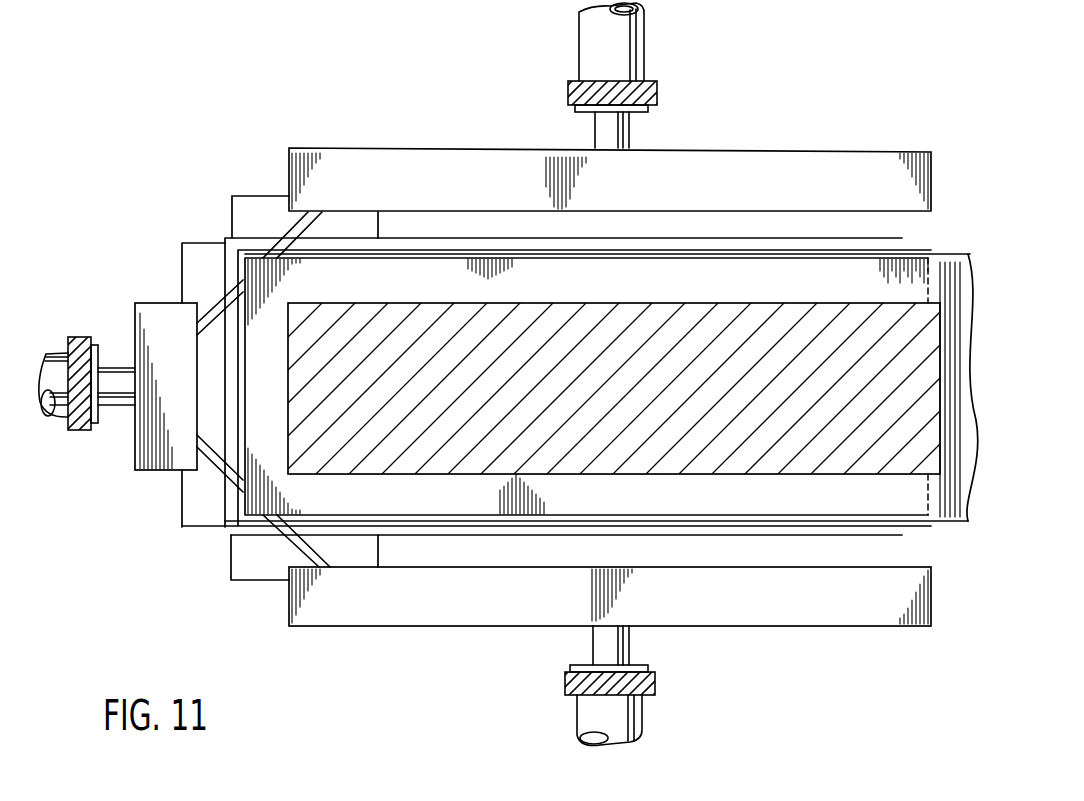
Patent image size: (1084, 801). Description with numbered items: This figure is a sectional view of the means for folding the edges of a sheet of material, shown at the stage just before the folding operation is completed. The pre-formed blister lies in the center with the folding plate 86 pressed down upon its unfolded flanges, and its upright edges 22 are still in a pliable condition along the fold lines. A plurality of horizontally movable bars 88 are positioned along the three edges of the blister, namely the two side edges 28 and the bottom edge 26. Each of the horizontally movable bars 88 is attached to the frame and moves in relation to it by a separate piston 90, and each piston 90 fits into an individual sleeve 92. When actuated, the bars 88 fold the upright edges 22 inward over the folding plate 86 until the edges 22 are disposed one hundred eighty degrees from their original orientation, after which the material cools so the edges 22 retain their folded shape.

The edges 22 is at (483, 252).
The bottom edge 26 is at (281, 371).
The side edges 28 is at (653, 257).
The folding plate 86 is at (952, 284).
The horizontally movable bars 88 is at (493, 160).
The pistons 90 is at (618, 131).
The sleeves 92 is at (612, 43).